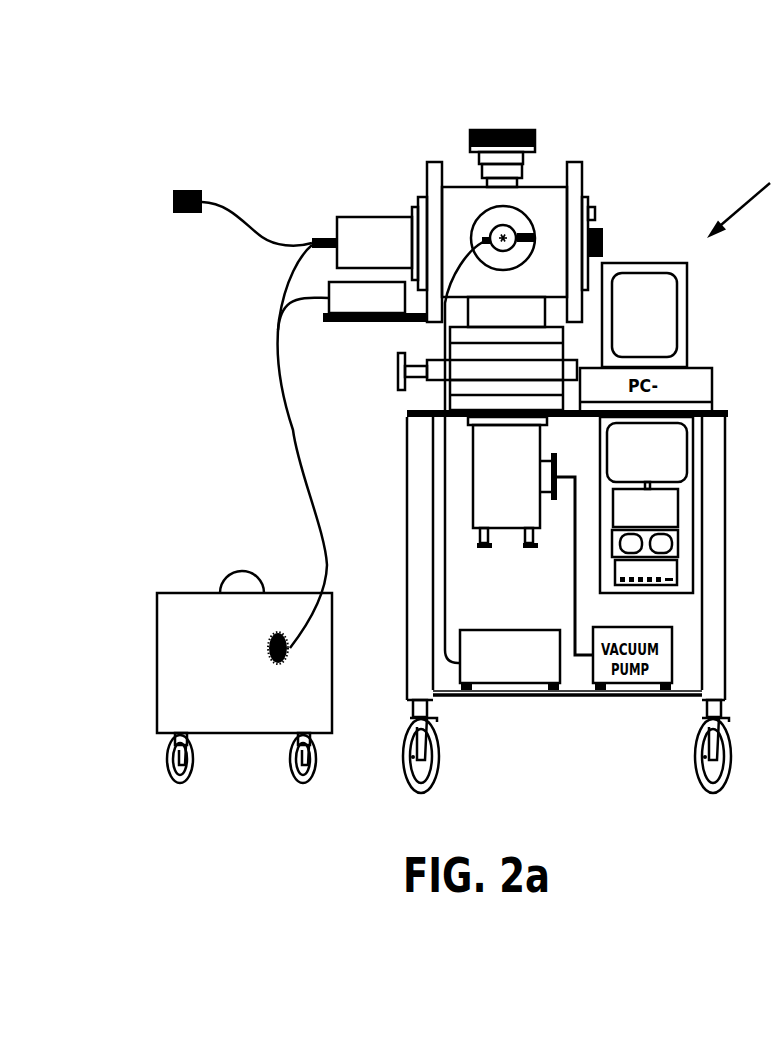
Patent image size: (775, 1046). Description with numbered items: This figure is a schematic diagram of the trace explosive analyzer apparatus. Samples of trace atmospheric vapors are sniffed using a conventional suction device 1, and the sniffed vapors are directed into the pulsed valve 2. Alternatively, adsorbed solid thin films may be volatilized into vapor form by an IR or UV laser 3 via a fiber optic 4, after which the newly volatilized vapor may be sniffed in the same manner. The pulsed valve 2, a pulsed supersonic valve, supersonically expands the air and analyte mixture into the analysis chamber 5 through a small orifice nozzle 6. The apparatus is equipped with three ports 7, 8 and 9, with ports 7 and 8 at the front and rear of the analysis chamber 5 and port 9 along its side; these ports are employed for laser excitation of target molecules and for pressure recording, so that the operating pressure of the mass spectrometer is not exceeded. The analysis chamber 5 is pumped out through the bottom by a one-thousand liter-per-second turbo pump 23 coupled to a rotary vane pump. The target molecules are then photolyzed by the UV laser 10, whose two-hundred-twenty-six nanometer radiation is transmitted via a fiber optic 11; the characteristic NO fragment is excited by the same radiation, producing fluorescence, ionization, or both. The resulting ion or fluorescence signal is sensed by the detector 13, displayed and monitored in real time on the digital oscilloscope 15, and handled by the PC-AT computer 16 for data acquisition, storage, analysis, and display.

The suction device 1 is at (242, 205).
The pulsed valve 2 is at (362, 242).
The laser 3 is at (375, 302).
The fiber optic 4 is at (244, 677).
The analysis chamber 5 is at (500, 242).
The small orifice nozzle 6 is at (476, 226).
The port 7 is at (521, 209).
The port 8 is at (608, 182).
The port 9 is at (607, 228).
The UV laser 10 is at (510, 660).
The fiber optic 11 is at (567, 601).
The detector 13 is at (502, 138).
The digital oscilloscope 15 is at (646, 505).
The PC-AT computer 16 is at (644, 315).
The turbo pump 23 is at (530, 536).